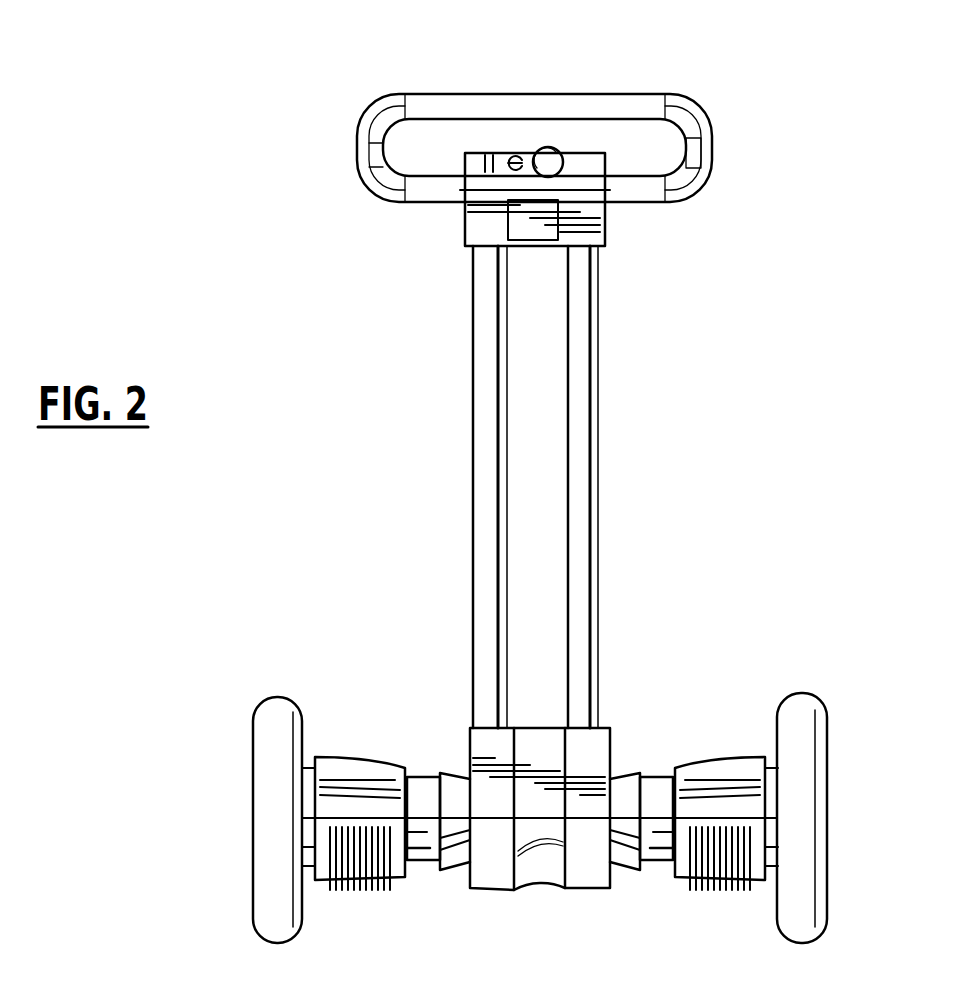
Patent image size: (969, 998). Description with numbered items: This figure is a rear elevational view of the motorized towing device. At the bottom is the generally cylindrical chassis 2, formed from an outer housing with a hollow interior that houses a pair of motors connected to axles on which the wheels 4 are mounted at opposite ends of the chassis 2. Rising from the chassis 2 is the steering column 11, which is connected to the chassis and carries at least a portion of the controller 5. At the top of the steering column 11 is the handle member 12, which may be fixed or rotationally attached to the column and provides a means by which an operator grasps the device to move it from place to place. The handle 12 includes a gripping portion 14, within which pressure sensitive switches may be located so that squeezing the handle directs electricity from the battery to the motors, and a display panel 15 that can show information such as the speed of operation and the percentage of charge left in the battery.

The chassis 2 is at (585, 872).
The wheels 4 is at (810, 797).
The controller 5 is at (605, 223).
The steering column 11 is at (598, 449).
The handle member 12 is at (696, 120).
The gripping portion 14 is at (450, 102).
The display panel 15 is at (553, 152).